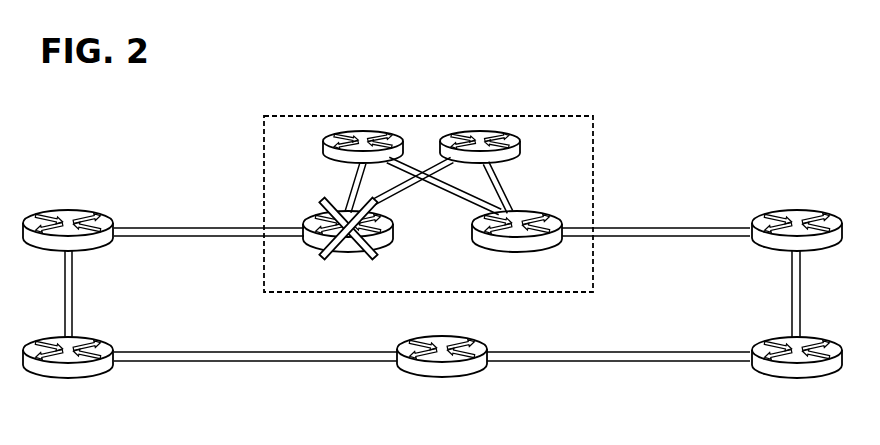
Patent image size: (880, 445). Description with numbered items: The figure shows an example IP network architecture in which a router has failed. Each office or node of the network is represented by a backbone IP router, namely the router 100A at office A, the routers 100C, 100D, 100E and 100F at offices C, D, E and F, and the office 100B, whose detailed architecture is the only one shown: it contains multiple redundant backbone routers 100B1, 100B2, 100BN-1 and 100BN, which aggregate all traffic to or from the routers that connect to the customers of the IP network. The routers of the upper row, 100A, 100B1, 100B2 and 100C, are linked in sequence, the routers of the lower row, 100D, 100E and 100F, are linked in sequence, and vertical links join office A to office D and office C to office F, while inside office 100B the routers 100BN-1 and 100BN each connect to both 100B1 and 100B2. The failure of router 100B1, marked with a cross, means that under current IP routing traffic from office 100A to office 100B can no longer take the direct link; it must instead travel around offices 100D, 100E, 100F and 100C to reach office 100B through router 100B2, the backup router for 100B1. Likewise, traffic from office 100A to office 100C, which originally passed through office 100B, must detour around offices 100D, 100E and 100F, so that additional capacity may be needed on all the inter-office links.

The IP router at office A 100A is at (68, 212).
The office/node B 100B is at (427, 186).
The failed router at office B 100B1 is at (329, 241).
The backup router at office B 100B2 is at (517, 246).
The redundant router at office B 100BN-1 is at (334, 156).
The redundant router at office B 100BN is at (515, 147).
The IP router at office C 100C is at (797, 210).
The IP router at office D 100D is at (68, 381).
The IP router at office E 100E is at (442, 382).
The IP router at office F 100F is at (797, 381).